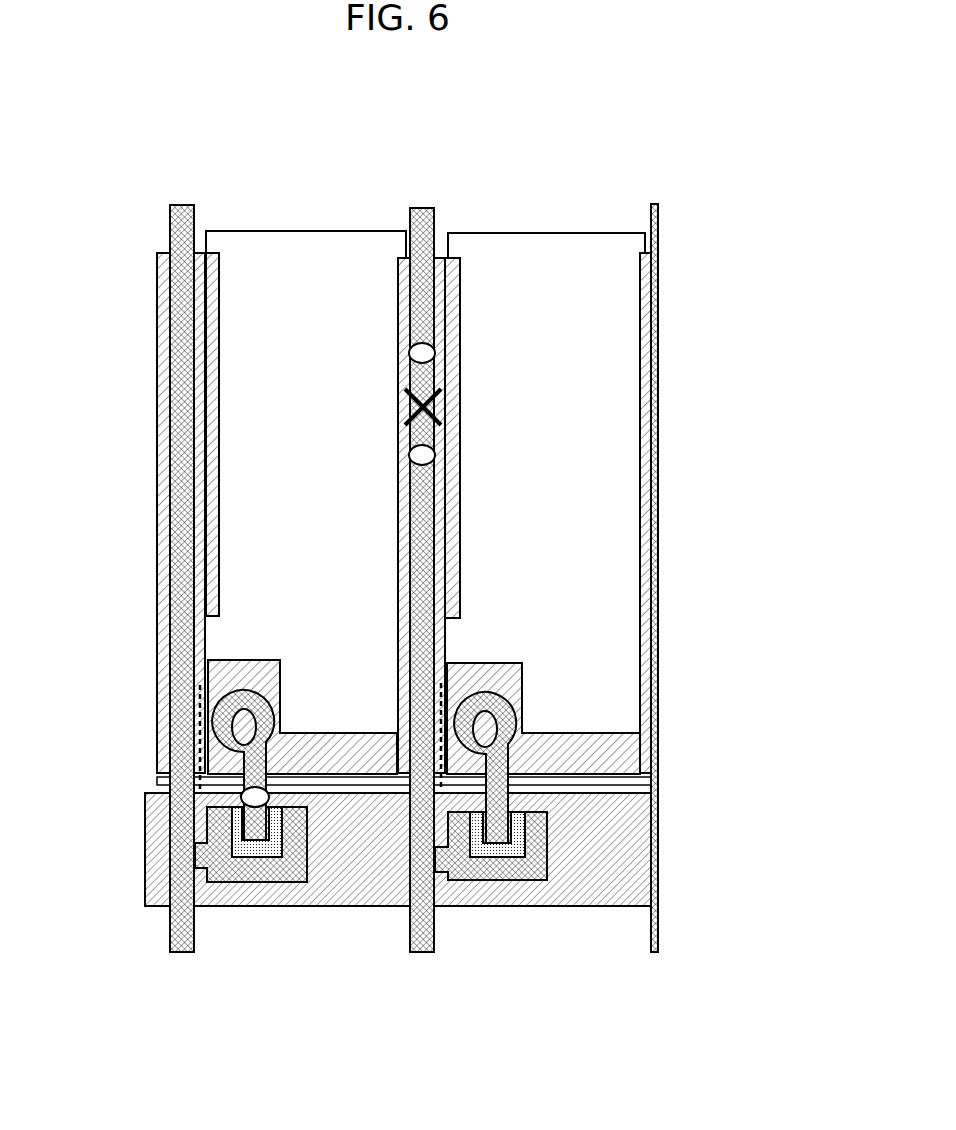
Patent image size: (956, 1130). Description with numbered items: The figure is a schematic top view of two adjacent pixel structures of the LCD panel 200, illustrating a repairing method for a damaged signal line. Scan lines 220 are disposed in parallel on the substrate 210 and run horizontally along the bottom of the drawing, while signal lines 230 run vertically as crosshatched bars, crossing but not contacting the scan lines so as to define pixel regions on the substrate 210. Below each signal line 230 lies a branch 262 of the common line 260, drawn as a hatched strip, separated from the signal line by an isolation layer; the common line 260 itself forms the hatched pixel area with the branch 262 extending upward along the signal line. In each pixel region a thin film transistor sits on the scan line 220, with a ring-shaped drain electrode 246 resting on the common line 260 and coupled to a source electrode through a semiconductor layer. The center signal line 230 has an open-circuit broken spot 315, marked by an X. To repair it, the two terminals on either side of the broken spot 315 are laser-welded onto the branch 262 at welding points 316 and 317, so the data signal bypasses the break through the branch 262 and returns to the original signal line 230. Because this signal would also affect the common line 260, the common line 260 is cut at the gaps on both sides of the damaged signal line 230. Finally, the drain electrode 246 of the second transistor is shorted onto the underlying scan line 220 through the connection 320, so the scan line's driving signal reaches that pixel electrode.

The LCD panel 200 is at (107, 92).
The substrate 210 is at (147, 245).
The signal line 230 is at (423, 207).
The welding point 316 is at (433, 343).
The broken spot 315 is at (437, 407).
The welding point 317 is at (432, 449).
The branch 262 is at (399, 492).
The common line 260 is at (315, 738).
The drain electrode 246 is at (495, 703).
The scan line 220 is at (145, 830).
The connection between the TFT and the scan line 320 is at (312, 869).